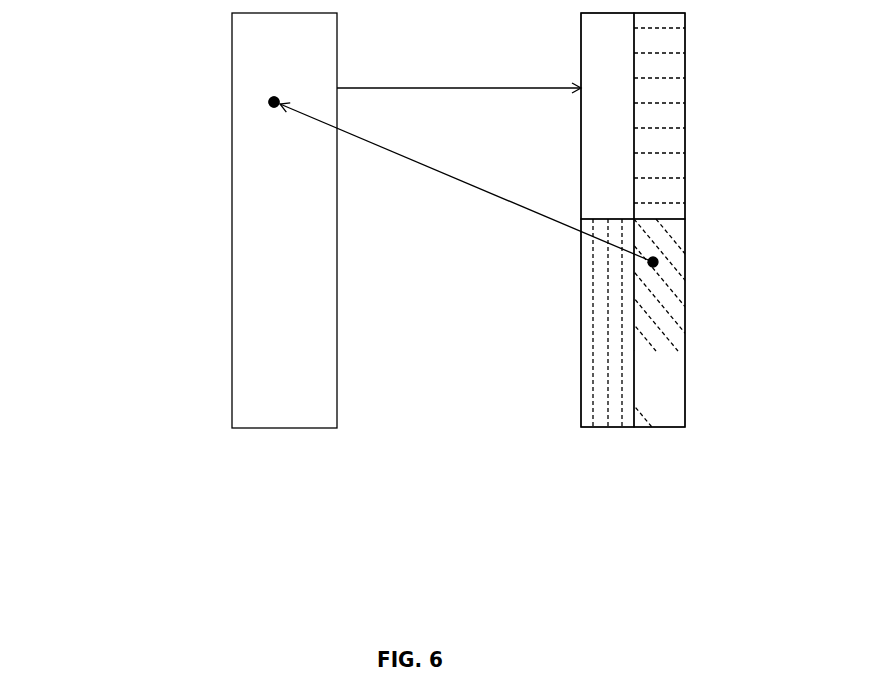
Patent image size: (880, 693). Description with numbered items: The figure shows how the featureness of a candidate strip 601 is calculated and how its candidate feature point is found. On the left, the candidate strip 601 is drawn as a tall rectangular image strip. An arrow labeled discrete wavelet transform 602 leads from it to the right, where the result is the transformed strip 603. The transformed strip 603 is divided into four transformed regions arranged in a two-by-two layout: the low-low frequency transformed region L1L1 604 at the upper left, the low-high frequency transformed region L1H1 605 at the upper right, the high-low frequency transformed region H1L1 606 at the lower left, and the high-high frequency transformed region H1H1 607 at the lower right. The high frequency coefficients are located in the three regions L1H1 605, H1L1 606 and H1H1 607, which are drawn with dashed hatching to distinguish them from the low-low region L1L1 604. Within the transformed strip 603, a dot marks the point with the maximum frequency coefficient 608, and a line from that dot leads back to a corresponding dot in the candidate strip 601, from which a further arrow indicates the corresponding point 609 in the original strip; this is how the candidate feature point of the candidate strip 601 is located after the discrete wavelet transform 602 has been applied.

The candidate strip 601 is at (263, 351).
The discrete wavelet transform 602 is at (459, 55).
The transformed strip 603 is at (643, 443).
The low-low frequency transformed region L1L1 604 is at (571, 116).
The low-high frequency transformed region L1H1 605 is at (702, 116).
The high-low frequency transformed region H1L1 606 is at (567, 323).
The high-high frequency transformed region H1H1 607 is at (614, 325).
The point with maximum frequency coefficient 608 is at (653, 262).
The corresponding point in input image 609 is at (274, 102).